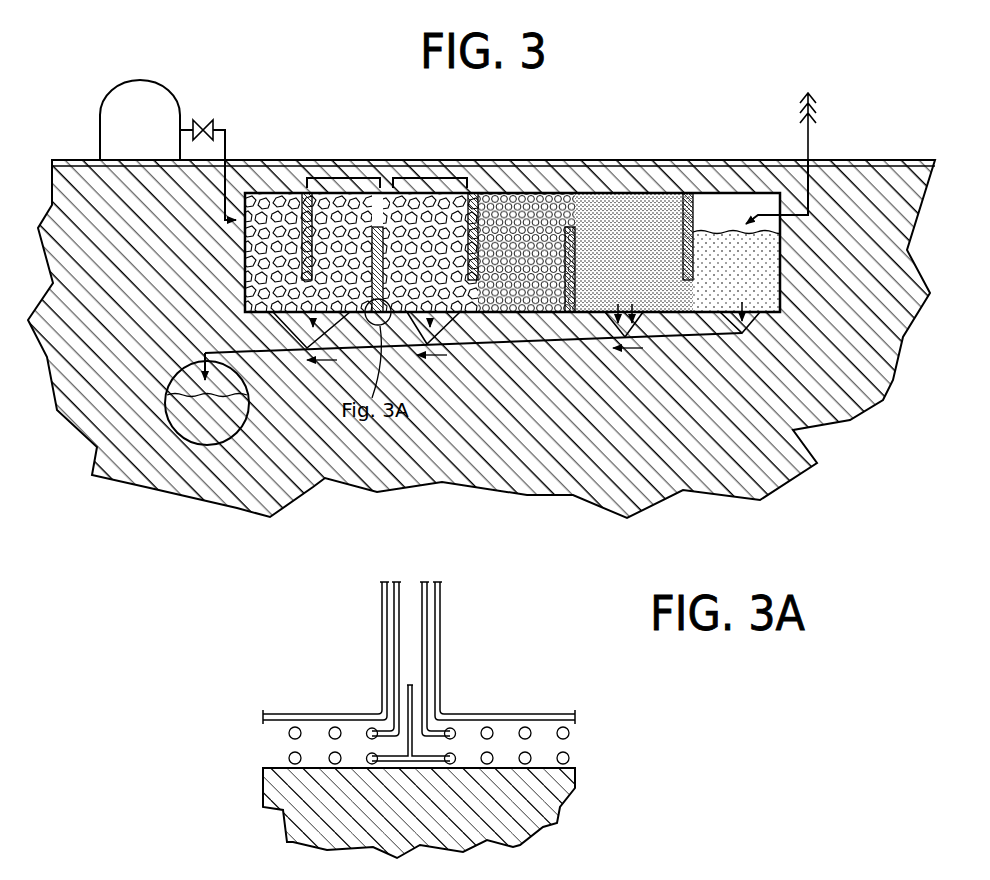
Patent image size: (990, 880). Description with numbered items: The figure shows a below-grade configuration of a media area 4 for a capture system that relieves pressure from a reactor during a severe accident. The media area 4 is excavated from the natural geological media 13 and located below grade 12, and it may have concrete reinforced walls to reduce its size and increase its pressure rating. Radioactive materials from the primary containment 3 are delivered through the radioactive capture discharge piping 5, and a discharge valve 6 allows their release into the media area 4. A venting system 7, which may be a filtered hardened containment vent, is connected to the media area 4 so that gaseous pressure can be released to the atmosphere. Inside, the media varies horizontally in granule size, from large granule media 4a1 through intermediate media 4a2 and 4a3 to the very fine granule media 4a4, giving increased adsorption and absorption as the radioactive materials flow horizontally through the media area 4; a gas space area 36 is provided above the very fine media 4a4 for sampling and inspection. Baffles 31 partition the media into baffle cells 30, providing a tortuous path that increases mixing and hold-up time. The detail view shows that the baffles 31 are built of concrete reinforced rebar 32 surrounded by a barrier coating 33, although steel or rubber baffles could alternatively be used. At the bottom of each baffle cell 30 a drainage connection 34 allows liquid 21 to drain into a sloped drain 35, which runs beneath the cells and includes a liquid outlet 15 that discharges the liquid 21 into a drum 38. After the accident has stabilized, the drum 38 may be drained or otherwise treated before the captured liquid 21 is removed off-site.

In FIG. 3, the primary containment 3 is at (140, 120).
In FIG. 3, the media area 4 is at (473, 267).
In FIG. 3, the large granule media 4a1 is at (280, 222).
In FIG. 3, the media of intermediate granule size 4a2 is at (535, 215).
In FIG. 3, the media of intermediate granule size 4a3 is at (590, 230).
In FIG. 3, the fine granule media 4a4 is at (730, 240).
In FIG. 3, the radioactive capture discharge piping 5 is at (224, 200).
In FIG. 3, the discharge valve 6 is at (210, 120).
In FIG. 3, the venting system 7 is at (818, 100).
In FIG. 3, the grade 12 is at (900, 159).
In FIG. 3, the natural geological media 13 is at (900, 268).
In FIG. 3A, the natural geological media 13 is at (537, 808).
In FIG. 3, the liquid outlet 15 is at (204, 354).
In FIG. 3, the liquid 21 is at (473, 331).
In FIG. 3, the baffle cells 30 is at (425, 168).
In FIG. 3, the baffles 31 is at (477, 192).
In FIG. 3A, the baffles 31 is at (440, 568).
In FIG. 3A, the concrete reinforced rebar 32 is at (428, 610).
In FIG. 3A, the barrier coating 33 is at (445, 648).
In FIG. 3, the drainage connection 34 is at (445, 333).
In FIG. 3, the sloped drain 35 is at (500, 344).
In FIG. 3, the gas space area 36 is at (760, 214).
In FIG. 3, the drum 38 is at (167, 376).